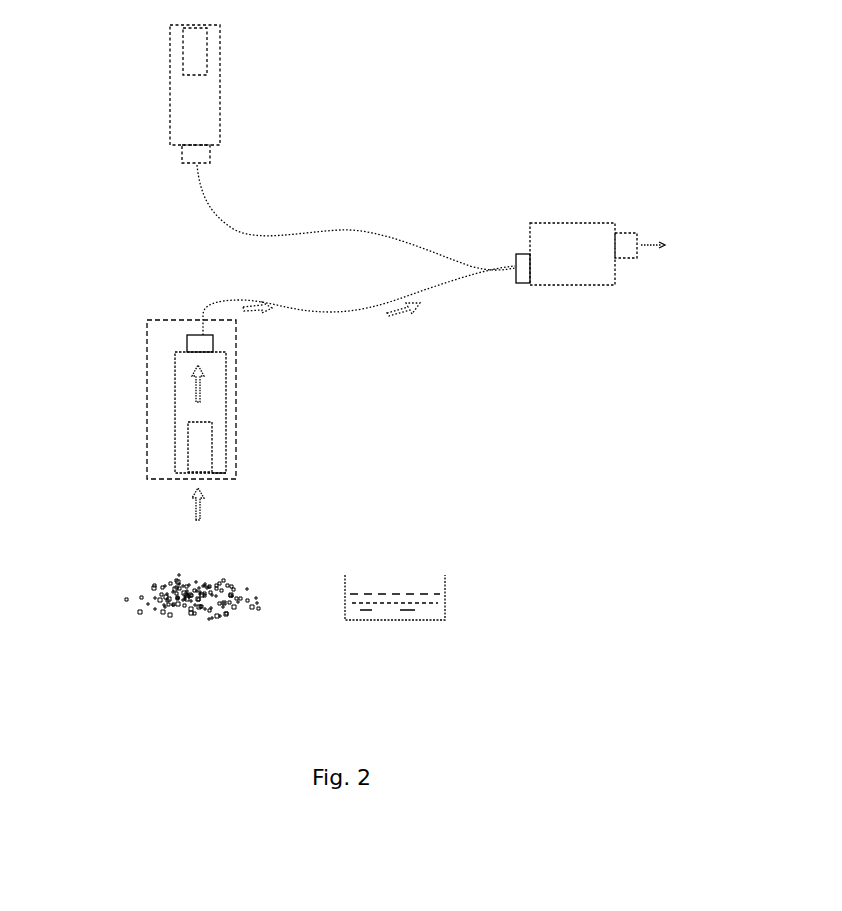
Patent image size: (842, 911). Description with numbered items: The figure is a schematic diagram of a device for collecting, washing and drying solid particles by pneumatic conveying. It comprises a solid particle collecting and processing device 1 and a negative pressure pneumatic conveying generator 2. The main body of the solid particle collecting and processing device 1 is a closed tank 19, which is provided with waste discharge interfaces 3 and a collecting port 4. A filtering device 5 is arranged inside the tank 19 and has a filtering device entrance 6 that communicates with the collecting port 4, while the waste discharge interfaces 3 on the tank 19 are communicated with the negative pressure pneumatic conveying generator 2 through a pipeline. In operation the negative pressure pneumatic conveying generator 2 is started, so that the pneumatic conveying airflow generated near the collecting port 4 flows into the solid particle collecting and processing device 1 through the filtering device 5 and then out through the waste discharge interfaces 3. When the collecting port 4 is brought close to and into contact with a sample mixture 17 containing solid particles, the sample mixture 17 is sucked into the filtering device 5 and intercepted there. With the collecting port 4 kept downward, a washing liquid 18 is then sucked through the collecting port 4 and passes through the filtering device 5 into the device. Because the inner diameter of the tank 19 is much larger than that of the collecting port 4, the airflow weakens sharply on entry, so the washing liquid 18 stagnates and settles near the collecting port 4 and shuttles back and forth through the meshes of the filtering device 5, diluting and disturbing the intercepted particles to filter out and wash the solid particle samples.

The solid particle collecting and processing device 1 is at (138, 393).
The negative pressure pneumatic conveying generator 2 is at (572, 250).
The waste discharge interfaces 3 is at (187, 336).
The collecting port 4 is at (208, 463).
The filtering device 5 is at (198, 441).
The filtering device entrance 6 is at (213, 462).
The sample mixture containing solid particles 17 is at (170, 612).
The washing liquid 18 is at (418, 608).
The tank 19 is at (175, 362).